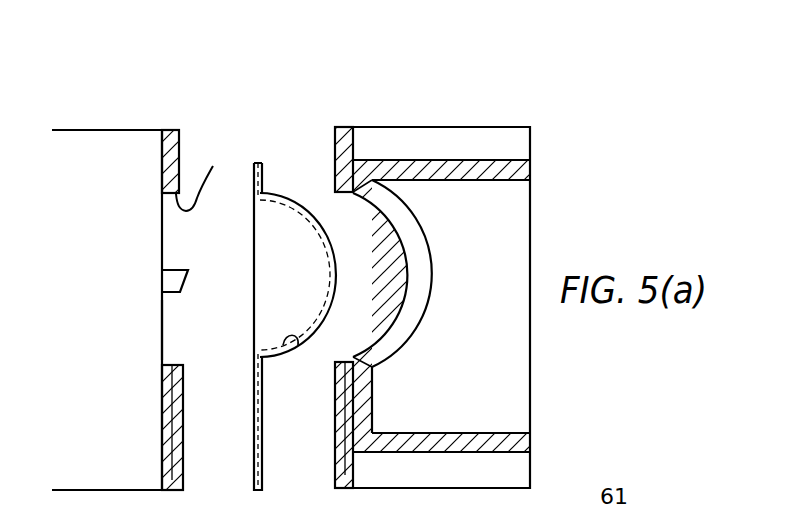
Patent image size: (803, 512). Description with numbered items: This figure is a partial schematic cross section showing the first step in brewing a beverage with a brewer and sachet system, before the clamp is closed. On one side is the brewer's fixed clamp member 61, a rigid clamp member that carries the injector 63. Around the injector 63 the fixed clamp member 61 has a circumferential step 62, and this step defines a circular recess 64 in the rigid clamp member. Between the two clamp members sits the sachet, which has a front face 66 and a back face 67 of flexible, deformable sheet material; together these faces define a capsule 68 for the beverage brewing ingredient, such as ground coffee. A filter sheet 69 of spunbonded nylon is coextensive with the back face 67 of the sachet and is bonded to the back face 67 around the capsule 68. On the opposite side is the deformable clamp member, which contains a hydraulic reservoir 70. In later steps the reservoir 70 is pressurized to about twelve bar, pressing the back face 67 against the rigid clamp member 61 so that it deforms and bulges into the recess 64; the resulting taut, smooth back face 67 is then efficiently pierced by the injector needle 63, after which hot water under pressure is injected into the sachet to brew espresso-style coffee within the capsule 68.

The fixed clamp member 61 is at (135, 130).
The circumferential step 62 is at (208, 173).
The injector 63 is at (183, 280).
The circular recess 64 is at (162, 325).
The front face 66 is at (284, 196).
The back face 67 is at (254, 222).
The capsule 68 is at (290, 288).
The filter sheet 69 is at (283, 345).
The hydraulic reservoir 70 is at (478, 308).